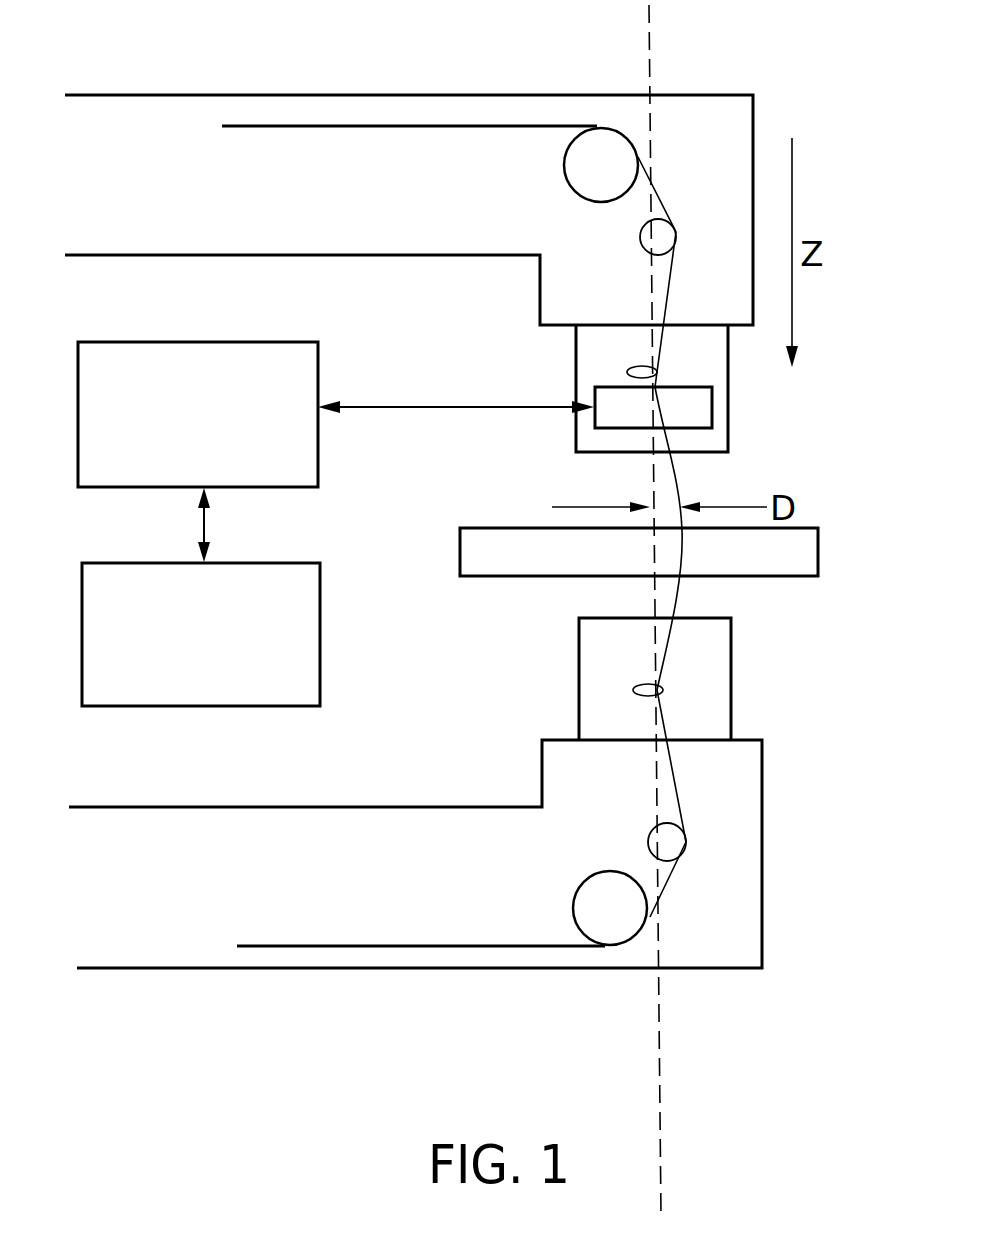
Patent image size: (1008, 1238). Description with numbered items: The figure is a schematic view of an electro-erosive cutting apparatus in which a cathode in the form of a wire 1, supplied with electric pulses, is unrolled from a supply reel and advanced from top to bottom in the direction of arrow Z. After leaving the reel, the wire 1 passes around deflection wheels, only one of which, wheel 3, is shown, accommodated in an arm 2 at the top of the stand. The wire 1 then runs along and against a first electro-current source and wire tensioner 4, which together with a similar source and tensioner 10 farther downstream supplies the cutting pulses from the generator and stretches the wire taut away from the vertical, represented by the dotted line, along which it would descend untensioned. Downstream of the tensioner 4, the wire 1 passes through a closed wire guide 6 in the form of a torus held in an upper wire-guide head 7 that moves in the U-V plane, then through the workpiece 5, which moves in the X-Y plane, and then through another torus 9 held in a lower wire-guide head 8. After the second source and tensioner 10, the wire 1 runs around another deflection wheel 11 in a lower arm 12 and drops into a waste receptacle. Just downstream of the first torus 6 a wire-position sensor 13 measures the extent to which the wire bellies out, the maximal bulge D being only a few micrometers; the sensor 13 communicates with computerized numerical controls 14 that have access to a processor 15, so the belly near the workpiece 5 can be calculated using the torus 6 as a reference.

The wire 1 is at (658, 187).
The arm 2 is at (430, 108).
The deflection wheel 3 is at (597, 147).
The electro-current source and wire tensioner 4 is at (662, 237).
The workpiece 5 is at (820, 530).
The closed wire guide 6 is at (628, 370).
The upper wire-guide head 7 is at (712, 360).
The lower wire-guide head 8 is at (715, 650).
The torus 9 is at (634, 688).
The electric-current source and wire tensioner 10 is at (675, 837).
The deflection wheel 11 is at (623, 908).
The arm 12 is at (747, 952).
The wire-position sensor 13 is at (700, 407).
The computerized numerical controls 14 is at (302, 343).
The processor 15 is at (317, 607).